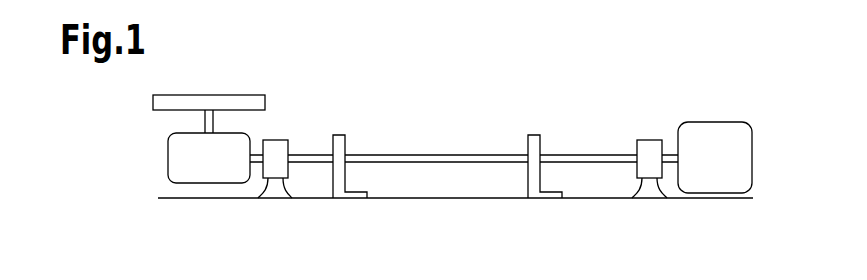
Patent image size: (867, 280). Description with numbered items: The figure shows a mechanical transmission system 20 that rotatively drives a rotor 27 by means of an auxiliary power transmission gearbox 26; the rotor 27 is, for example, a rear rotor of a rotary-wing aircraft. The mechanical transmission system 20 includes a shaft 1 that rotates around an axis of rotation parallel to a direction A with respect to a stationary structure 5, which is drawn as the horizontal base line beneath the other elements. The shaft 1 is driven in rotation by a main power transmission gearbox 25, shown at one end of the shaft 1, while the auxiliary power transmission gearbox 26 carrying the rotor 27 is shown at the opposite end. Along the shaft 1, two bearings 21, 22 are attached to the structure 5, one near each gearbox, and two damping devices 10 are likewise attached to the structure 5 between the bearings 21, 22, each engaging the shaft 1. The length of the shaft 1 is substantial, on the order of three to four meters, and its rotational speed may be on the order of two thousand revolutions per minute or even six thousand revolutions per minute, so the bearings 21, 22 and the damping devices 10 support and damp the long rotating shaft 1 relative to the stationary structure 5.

The shaft 1 is at (468, 155).
The stationary structure 5 is at (432, 199).
The damping device 10 is at (340, 135).
The mechanical transmission system 20 is at (579, 89).
The bearing 21 is at (280, 140).
The bearing 22 is at (652, 140).
The main power transmission gearbox 25 is at (715, 122).
The auxiliary power transmission gearbox 26 is at (168, 148).
The rotor 27 is at (233, 95).